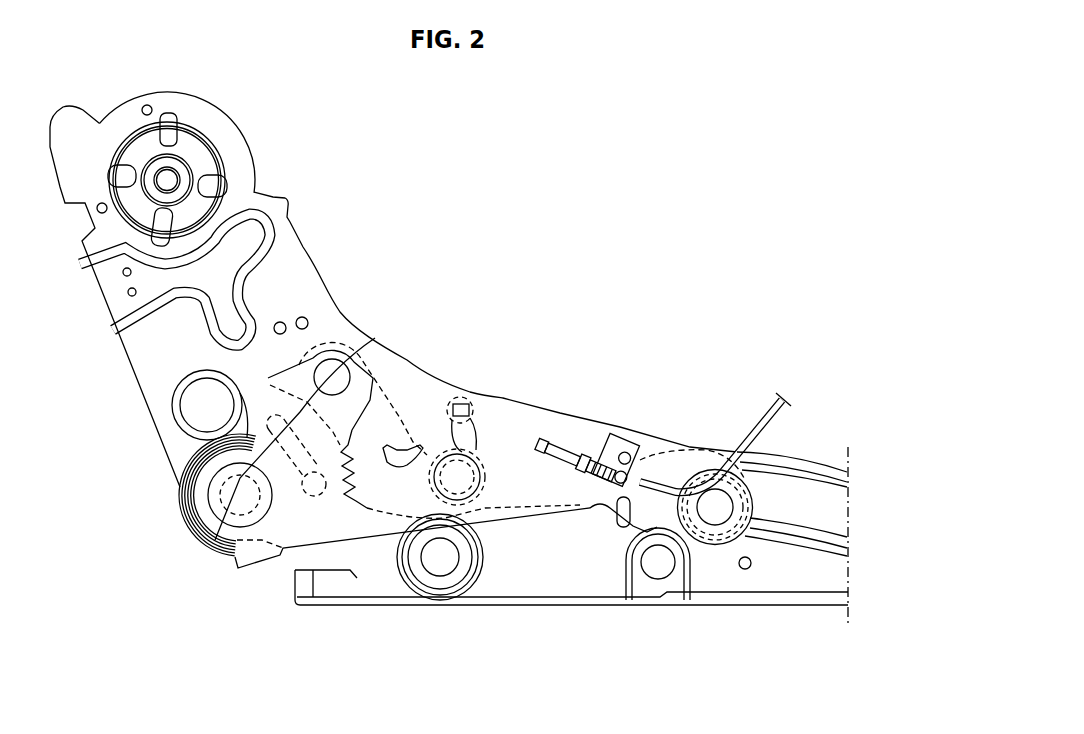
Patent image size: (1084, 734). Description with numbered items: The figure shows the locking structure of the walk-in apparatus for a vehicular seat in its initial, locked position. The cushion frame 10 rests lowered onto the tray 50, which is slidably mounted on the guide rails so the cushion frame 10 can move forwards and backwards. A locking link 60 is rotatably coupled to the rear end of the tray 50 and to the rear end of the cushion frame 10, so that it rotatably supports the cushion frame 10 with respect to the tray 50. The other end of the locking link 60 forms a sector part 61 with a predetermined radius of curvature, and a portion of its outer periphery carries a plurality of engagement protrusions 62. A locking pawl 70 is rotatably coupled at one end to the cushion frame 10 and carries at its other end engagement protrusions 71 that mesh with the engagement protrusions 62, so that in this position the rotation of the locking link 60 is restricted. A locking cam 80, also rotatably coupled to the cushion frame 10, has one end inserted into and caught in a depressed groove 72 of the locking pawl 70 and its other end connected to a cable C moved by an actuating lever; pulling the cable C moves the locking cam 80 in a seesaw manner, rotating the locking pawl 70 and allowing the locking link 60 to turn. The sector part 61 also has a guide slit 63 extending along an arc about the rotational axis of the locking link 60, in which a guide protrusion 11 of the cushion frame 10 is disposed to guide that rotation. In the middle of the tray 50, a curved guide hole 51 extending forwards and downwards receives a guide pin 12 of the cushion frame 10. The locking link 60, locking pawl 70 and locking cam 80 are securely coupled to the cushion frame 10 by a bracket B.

The cushion frame 10 is at (300, 278).
The guide protrusion 11 is at (302, 488).
The guide pin 12 is at (715, 515).
The tray 50 is at (560, 575).
The guide hole 51 is at (790, 518).
The locking link 60 is at (380, 558).
The sector part 61 is at (263, 407).
The engagement protrusions 62 is at (348, 465).
The guide slit 63 is at (207, 545).
The locking pawl 70 is at (362, 405).
The engagement protrusions 71 is at (350, 440).
The depressed groove 72 is at (390, 458).
The locking cam 80 is at (470, 400).
The bracket B is at (285, 365).
The cable C is at (672, 492).